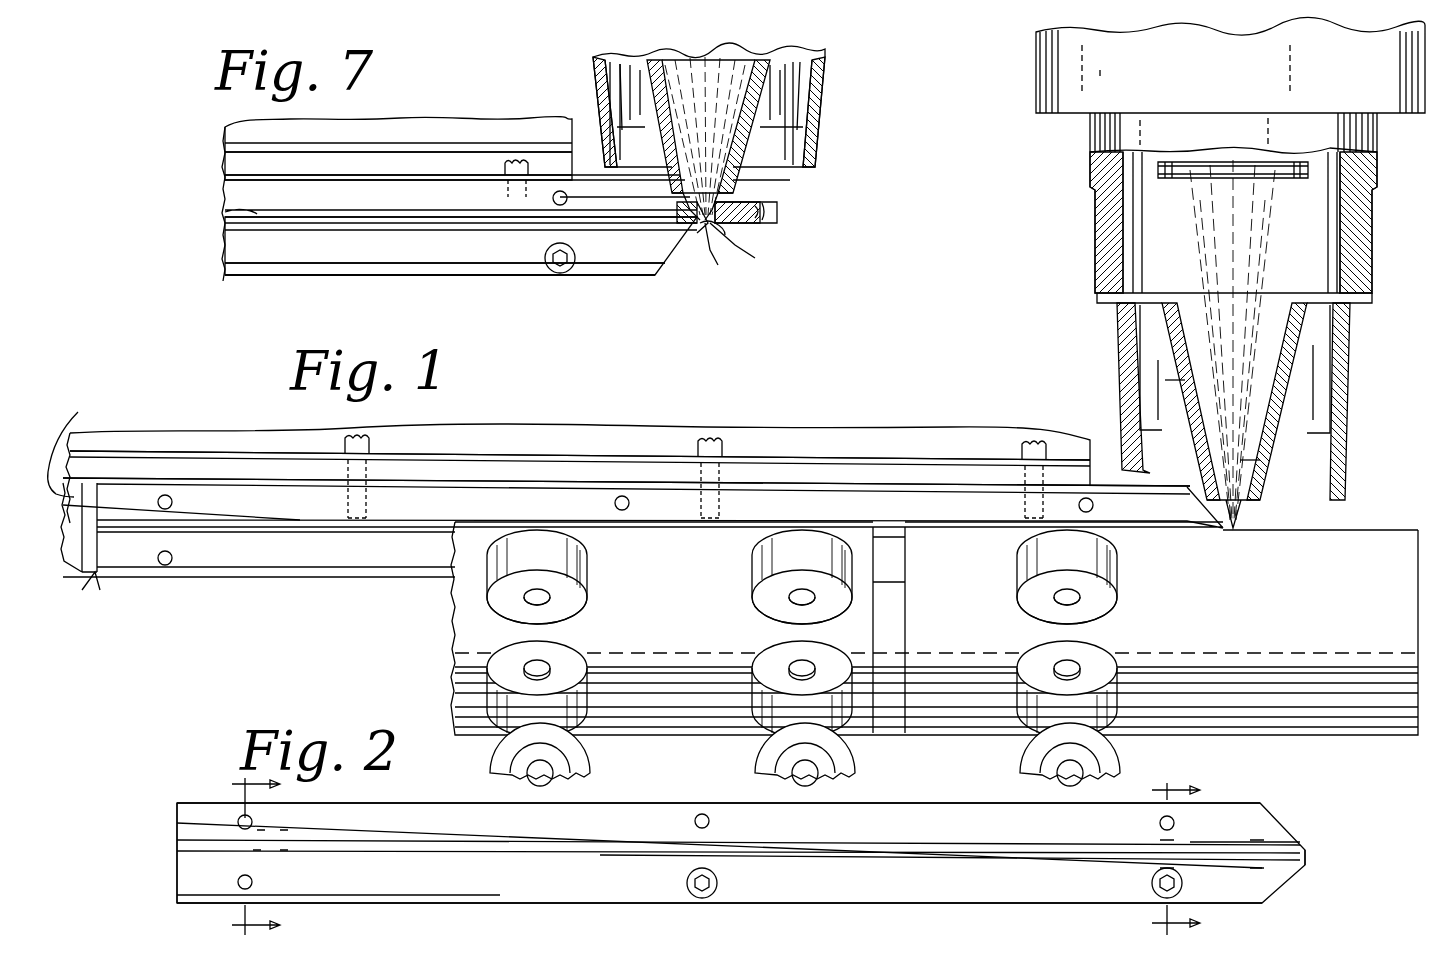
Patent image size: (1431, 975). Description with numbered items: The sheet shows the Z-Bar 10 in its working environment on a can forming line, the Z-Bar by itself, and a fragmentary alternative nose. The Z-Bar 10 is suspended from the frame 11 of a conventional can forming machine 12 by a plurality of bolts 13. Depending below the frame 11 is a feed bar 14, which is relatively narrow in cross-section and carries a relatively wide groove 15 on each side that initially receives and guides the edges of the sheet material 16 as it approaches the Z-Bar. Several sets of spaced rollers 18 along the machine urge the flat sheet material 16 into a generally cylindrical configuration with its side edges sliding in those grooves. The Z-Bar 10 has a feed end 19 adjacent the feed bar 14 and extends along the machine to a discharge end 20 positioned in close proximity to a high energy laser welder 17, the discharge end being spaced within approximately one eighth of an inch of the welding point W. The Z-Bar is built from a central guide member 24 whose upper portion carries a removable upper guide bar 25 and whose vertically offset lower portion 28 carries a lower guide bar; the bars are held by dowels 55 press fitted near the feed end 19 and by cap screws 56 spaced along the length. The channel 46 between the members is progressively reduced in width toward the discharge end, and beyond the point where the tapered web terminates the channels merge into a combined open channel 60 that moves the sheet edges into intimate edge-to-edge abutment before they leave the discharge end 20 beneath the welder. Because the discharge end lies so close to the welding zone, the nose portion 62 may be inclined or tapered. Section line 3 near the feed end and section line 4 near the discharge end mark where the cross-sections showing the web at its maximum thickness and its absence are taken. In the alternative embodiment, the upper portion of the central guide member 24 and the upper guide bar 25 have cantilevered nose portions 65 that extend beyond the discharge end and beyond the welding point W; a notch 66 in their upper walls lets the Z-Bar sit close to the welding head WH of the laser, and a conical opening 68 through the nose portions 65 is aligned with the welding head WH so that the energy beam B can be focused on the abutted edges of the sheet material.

In FIG. 7, the Z-Bar 10 is at (213, 255).
In FIG. 7, the frame 11 is at (385, 152).
In FIG. 1, the frame 11 is at (645, 428).
In FIG. 7, the can forming machine 12 is at (228, 125).
In FIG. 1, the can forming machine 12 is at (158, 430).
In FIG. 7, the bolts 13 is at (515, 160).
In FIG. 1, the bolts 13 is at (363, 441).
In FIG. 1, the feed bar 14 is at (88, 585).
In FIG. 1, the groove 15 is at (68, 441).
In FIG. 1, the sheet material 16 is at (450, 602).
In FIG. 7, the laser welder 17 is at (815, 110).
In FIG. 1, the laser welder 17 is at (1100, 255).
In FIG. 1, the rollers 18 is at (575, 606).
In FIG. 1, the feed end 19 is at (97, 575).
In FIG. 2, the feed end 19 is at (177, 882).
In FIG. 7, the discharge end 20 is at (696, 240).
In FIG. 2, the discharge end 20 is at (1308, 858).
In FIG. 7, the central guide member 24 is at (302, 277).
In FIG. 1, the central guide member 24 is at (330, 584).
In FIG. 2, the central guide member 24 is at (822, 903).
In FIG. 7, the upper guide bar 25 is at (225, 182).
In FIG. 1, the upper guide bar 25 is at (512, 500).
In FIG. 2, the upper guide bar 25 is at (458, 790).
In FIG. 7, the lower portion 28 is at (363, 267).
In FIG. 1, the lower portion 28 is at (245, 570).
In FIG. 2, the lower portion 28 is at (385, 893).
In FIG. 7, the channel 46 is at (245, 212).
In FIG. 1, the channel 46 is at (238, 520).
In FIG. 2, the channel 46 is at (378, 841).
In FIG. 1, the dowels 55 is at (172, 502).
In FIG. 2, the dowels 55 is at (237, 820).
In FIG. 7, the cap screws 56 is at (553, 198).
In FIG. 1, the cap screws 56 is at (854, 504).
In FIG. 2, the cap screws 56 is at (700, 814).
In FIG. 2, the combined channel 60 is at (1273, 848).
In FIG. 1, the nose portion 62 is at (1220, 470).
In FIG. 7, the cantilevered nose portions 65 is at (778, 218).
In FIG. 7, the notch 66 is at (660, 165).
In FIG. 7, the conical opening 68 is at (712, 223).
In FIG. 2, the section line 3 is at (249, 857).
In FIG. 2, the section line 4 is at (1202, 859).
In FIG. 7, the energy beam B is at (722, 270).
In FIG. 1, the energy beam B is at (1240, 467).
In FIG. 7, the welding point W is at (745, 254).
In FIG. 1, the welding point W is at (1240, 530).
In FIG. 7, the welding head WH is at (765, 181).
In FIG. 1, the welding head WH is at (1185, 375).